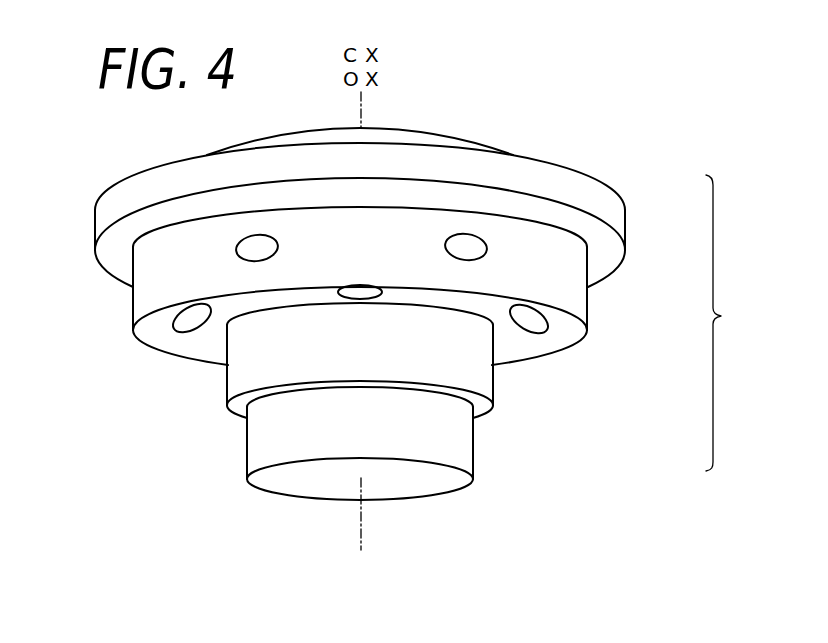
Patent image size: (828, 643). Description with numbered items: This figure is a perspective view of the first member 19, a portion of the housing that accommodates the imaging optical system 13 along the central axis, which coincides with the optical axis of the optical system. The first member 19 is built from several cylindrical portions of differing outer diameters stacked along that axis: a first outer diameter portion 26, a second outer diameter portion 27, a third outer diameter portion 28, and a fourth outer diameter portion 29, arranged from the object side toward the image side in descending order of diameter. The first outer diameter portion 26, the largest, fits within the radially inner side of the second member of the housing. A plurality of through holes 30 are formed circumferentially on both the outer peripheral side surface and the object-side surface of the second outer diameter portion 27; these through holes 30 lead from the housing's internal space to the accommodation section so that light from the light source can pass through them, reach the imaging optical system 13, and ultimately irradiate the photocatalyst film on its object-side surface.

The imaging optical system 13 is at (442, 132).
The first member 19 is at (731, 323).
The first outer diameter portion 26 is at (612, 208).
The second outer diameter portion 27 is at (568, 282).
The third outer diameter portion 28 is at (560, 370).
The fourth outer diameter portion 29 is at (560, 437).
The through hole 30 is at (240, 247).